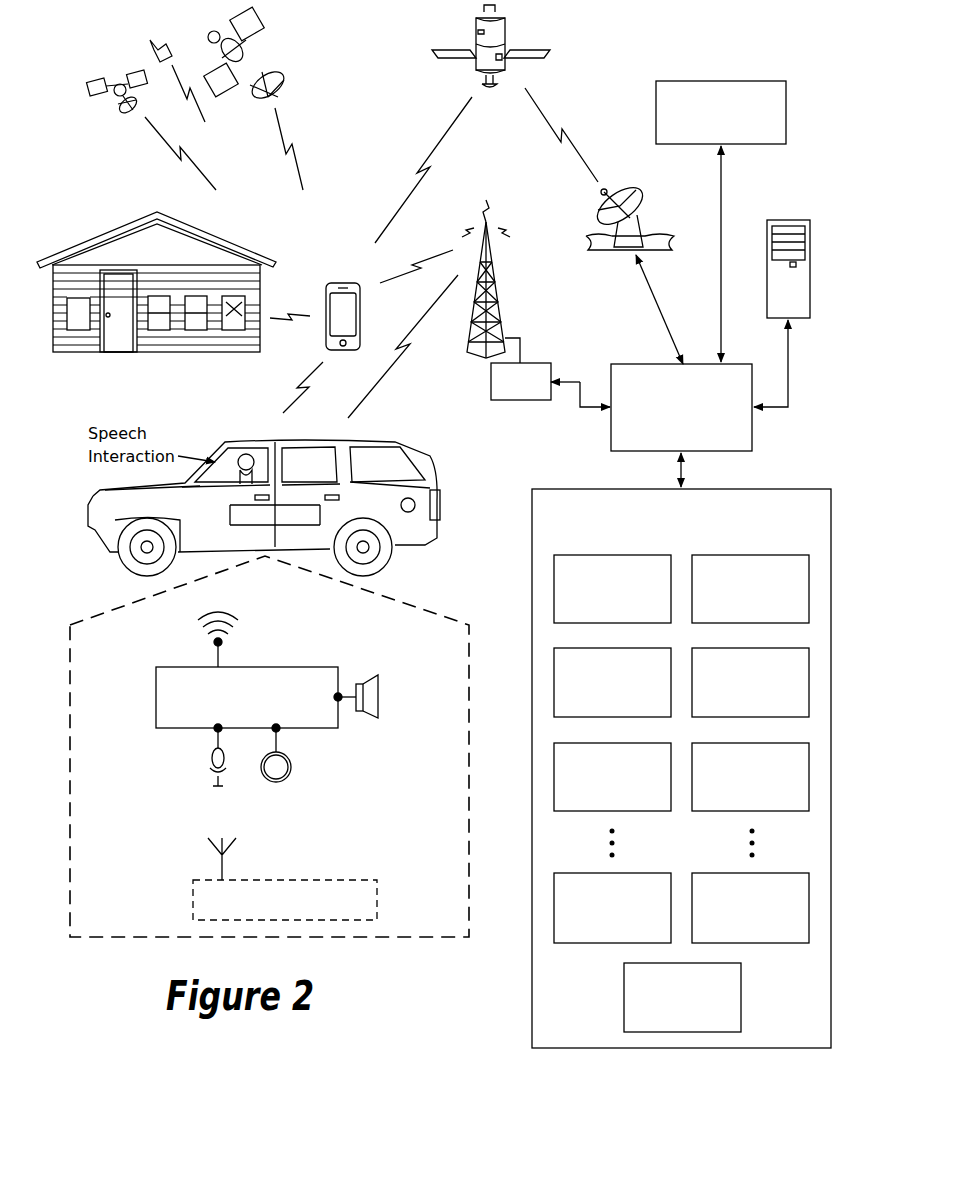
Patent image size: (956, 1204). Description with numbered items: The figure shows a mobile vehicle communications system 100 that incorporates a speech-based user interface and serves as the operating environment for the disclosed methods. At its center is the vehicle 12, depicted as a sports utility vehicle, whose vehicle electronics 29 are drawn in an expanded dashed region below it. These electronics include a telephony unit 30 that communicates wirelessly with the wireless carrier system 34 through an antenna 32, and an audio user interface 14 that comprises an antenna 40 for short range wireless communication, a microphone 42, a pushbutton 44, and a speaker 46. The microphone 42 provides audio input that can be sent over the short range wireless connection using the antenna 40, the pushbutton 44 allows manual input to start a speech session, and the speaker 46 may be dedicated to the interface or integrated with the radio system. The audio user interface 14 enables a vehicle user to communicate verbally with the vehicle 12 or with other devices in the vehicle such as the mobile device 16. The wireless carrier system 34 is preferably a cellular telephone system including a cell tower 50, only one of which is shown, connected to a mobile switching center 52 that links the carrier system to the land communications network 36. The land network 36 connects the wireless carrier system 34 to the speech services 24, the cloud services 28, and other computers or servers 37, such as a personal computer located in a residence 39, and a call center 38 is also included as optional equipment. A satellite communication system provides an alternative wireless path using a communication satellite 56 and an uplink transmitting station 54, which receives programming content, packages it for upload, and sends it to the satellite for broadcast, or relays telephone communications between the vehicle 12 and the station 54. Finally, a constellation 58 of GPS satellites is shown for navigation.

The mobile vehicle communications system 100 is at (730, 46).
The vehicle 12 is at (444, 528).
The audio user interface 14 is at (214, 458).
The mobile device 16 is at (328, 286).
The speech services 24 is at (739, 146).
The cloud services 28 is at (540, 489).
The vehicle electronics 29 is at (393, 938).
The telephony unit 30 is at (333, 878).
The antenna 32 is at (215, 870).
The wireless carrier system 34 is at (572, 302).
The land communications network 36 is at (752, 432).
The computer 37 is at (810, 284).
The call center 38 is at (742, 995).
The residence 39 is at (176, 353).
The antenna 40 is at (214, 653).
The microphone 42 is at (208, 763).
The pushbutton 44 is at (292, 766).
The speaker 46 is at (378, 706).
The cell tower 50 is at (498, 282).
The mobile switching center 52 is at (546, 362).
The uplink transmitting station 54 is at (652, 222).
The communication satellite 56 is at (506, 32).
The constellation of GPS satellites 58 is at (300, 96).